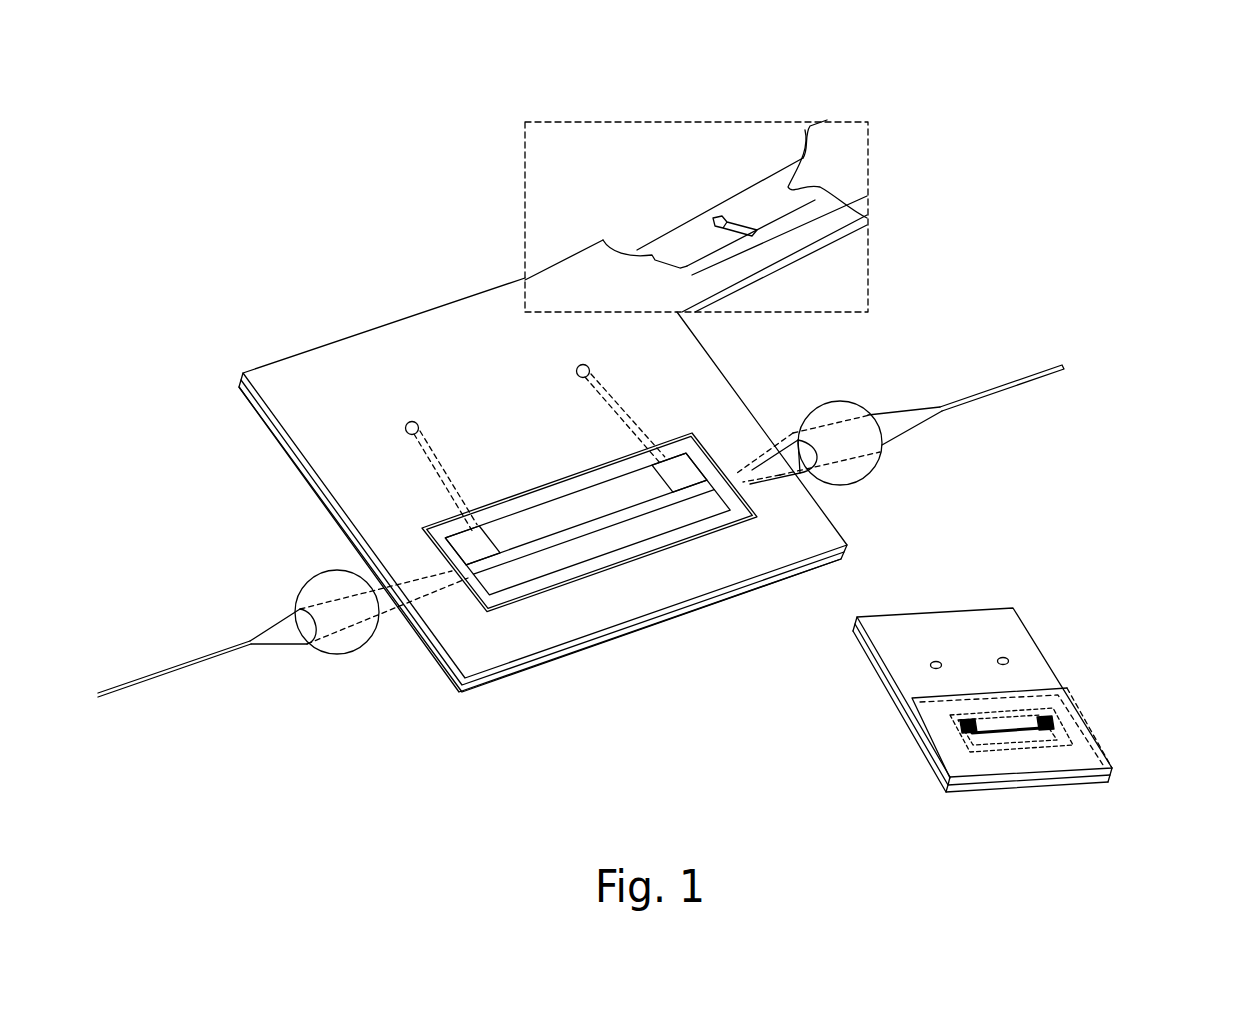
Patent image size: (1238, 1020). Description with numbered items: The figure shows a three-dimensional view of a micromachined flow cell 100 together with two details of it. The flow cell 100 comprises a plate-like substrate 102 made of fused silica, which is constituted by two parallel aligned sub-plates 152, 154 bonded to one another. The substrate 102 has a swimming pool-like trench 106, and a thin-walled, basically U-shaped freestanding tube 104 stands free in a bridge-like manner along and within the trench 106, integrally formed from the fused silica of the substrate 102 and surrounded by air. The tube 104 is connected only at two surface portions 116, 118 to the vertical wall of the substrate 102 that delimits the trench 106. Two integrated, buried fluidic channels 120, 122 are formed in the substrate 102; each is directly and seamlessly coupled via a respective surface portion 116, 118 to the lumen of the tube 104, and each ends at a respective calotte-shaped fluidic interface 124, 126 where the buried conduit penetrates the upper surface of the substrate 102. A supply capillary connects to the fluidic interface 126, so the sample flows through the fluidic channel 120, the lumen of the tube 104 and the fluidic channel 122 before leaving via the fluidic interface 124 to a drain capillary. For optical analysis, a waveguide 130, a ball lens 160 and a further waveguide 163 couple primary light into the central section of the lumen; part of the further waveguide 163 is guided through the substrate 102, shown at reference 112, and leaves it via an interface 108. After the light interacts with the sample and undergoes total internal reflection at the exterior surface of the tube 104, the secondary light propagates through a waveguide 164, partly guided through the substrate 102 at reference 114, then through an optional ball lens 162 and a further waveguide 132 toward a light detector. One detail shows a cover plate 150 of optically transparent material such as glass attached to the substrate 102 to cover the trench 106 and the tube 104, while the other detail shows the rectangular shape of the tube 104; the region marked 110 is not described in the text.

The micromachined flow cell 100 is at (335, 152).
The plate-like substrate 102 is at (221, 365).
The freestanding tube 104 is at (706, 190).
The trench 106 is at (622, 534).
The interface 108 is at (427, 577).
The second optical beam 110 is at (737, 473).
The part of further waveguide guided through substrate 112 is at (420, 588).
The part of waveguide guided through substrate 114 is at (768, 468).
The surface portion 116 is at (482, 527).
The surface portion 118 is at (648, 465).
The fluidic channel 120 is at (430, 463).
The fluidic channel 122 is at (597, 393).
The fluidic interface 124 is at (574, 357).
The fluidic interface 126 is at (404, 413).
The waveguide 130 is at (180, 665).
The further waveguide 132 is at (985, 388).
The cover plate 150 is at (1092, 668).
The sub-plate 152 is at (262, 405).
The sub-plate 154 is at (316, 381).
The ball lens 160 is at (322, 592).
The ball lens 162 is at (860, 455).
The further waveguide 163 is at (496, 580).
The waveguide 164 is at (706, 510).